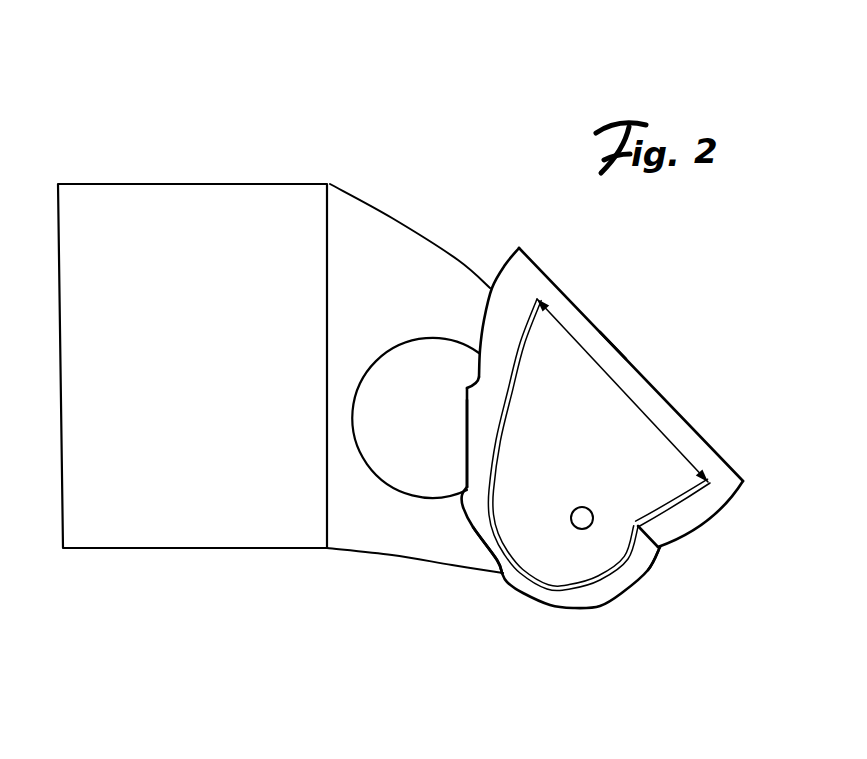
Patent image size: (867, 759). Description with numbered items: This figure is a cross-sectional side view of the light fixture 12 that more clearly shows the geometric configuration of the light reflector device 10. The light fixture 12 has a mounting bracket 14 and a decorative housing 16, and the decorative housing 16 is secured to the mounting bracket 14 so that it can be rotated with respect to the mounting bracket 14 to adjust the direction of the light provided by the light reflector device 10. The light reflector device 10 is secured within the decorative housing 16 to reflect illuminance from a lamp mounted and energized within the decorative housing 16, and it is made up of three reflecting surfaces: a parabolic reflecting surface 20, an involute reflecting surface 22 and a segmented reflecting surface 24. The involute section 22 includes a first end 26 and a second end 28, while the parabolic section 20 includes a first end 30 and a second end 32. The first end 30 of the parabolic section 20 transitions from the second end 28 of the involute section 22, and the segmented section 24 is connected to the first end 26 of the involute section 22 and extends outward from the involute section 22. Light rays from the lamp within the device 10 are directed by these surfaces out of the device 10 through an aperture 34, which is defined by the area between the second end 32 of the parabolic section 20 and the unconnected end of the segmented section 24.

The light reflector device 10 is at (626, 353).
The light fixture 12 is at (210, 161).
The mounting bracket 14 is at (123, 360).
The decorative housing 16 is at (519, 233).
The parabolic reflecting surface 20 is at (488, 429).
The involute reflecting surface 22 is at (563, 591).
The segmented reflecting surface 24 is at (679, 511).
The first end of the involute section 26 is at (642, 535).
The second end of the involute section 28 is at (493, 530).
The first end of the parabolic section 30 is at (488, 510).
The second end of the parabolic section 32 is at (537, 299).
The aperture 34 is at (600, 362).